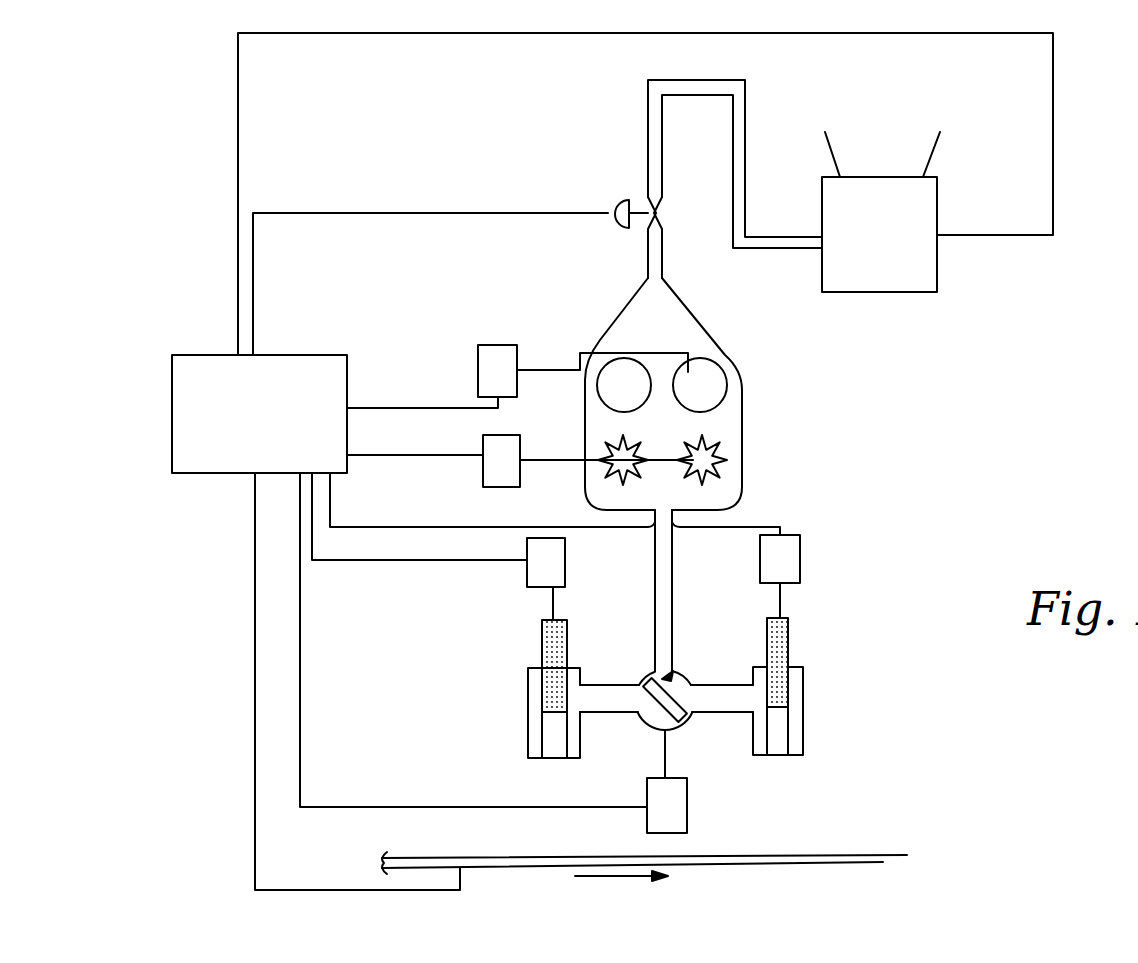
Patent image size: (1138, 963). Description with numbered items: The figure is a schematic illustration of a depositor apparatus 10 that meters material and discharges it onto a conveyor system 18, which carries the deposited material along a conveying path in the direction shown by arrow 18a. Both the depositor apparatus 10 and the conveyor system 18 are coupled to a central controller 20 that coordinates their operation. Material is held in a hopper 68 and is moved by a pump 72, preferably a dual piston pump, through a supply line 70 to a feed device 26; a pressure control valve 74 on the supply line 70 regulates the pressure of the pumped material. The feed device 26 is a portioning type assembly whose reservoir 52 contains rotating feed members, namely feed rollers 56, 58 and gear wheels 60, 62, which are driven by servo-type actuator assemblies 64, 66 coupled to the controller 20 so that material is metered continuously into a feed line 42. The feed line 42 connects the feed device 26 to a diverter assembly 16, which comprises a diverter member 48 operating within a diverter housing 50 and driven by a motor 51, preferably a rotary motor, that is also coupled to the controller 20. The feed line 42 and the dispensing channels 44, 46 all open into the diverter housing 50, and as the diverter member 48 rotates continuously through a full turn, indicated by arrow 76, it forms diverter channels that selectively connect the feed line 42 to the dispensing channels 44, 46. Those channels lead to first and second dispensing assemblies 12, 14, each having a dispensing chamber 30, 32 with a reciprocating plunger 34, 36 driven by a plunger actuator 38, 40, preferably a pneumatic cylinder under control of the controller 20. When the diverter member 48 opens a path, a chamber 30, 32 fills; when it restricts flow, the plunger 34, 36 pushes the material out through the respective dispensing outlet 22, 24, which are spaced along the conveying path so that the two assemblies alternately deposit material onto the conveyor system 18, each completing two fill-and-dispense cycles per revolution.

The depositor apparatus 10 is at (892, 445).
The first dispensing assembly 12 is at (577, 646).
The second dispensing assembly 14 is at (811, 639).
The diverter assembly 16 is at (684, 664).
The conveyor system 18 is at (804, 854).
The arrow 18a is at (590, 880).
The central controller 20 is at (349, 382).
The first dispensing outlet 22 is at (545, 758).
The second dispensing outlet 24 is at (778, 756).
The feed device 26 is at (746, 393).
The first dispensing chamber 30 is at (542, 722).
The second dispensing chamber 32 is at (788, 718).
The first reciprocating plunger 34 is at (545, 645).
The second reciprocating plunger 36 is at (785, 662).
The first plunger actuator 38 is at (525, 575).
The second plunger actuator 40 is at (791, 533).
The feed line 42 is at (676, 557).
The first dispensing channel 44 is at (590, 688).
The second dispensing channel 46 is at (707, 688).
The diverter member 48 is at (645, 722).
The diverter housing 50 is at (688, 723).
The motor 51 is at (690, 805).
The reservoir 52 is at (690, 318).
The first feed roller 56 is at (608, 385).
The second feed roller 58 is at (712, 352).
The first gear wheel 60 is at (600, 478).
The second gear wheel 62 is at (710, 455).
The first servo-type actuator assembly 64 is at (478, 372).
The second servo-type actuator assembly 66 is at (483, 470).
The hopper 68 is at (937, 153).
The supply line 70 is at (747, 90).
The pump 72 is at (938, 220).
The pressure control valve 74 is at (621, 200).
The arrow 76 is at (696, 696).